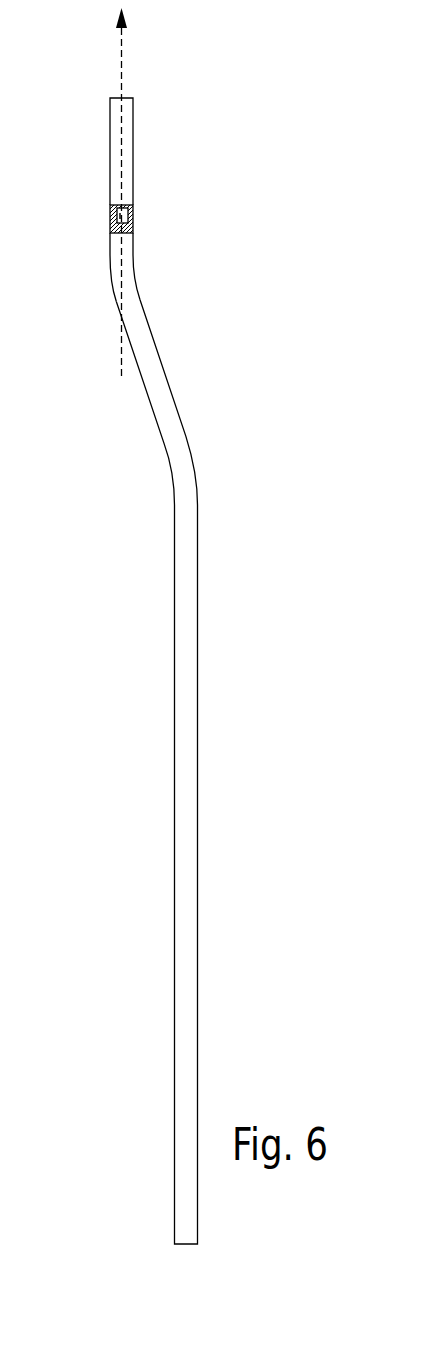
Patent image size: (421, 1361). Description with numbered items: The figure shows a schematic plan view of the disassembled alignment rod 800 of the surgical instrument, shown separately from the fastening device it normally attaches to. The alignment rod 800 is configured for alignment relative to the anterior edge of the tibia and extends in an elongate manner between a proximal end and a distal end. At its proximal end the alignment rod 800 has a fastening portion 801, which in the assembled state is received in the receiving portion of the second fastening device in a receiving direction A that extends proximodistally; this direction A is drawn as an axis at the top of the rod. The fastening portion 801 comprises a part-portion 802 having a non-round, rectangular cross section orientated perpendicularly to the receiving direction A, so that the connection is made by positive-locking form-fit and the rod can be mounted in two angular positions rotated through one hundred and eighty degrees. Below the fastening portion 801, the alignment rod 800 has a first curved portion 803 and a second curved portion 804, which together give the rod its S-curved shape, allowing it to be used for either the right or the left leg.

The alignment rod 800 is at (112, 763).
The fastening portion 801 is at (94, 132).
The part-portion 802 is at (150, 217).
The first curved portion 803 is at (153, 277).
The second curved portion 804 is at (160, 494).
The receiving direction A is at (123, 38).